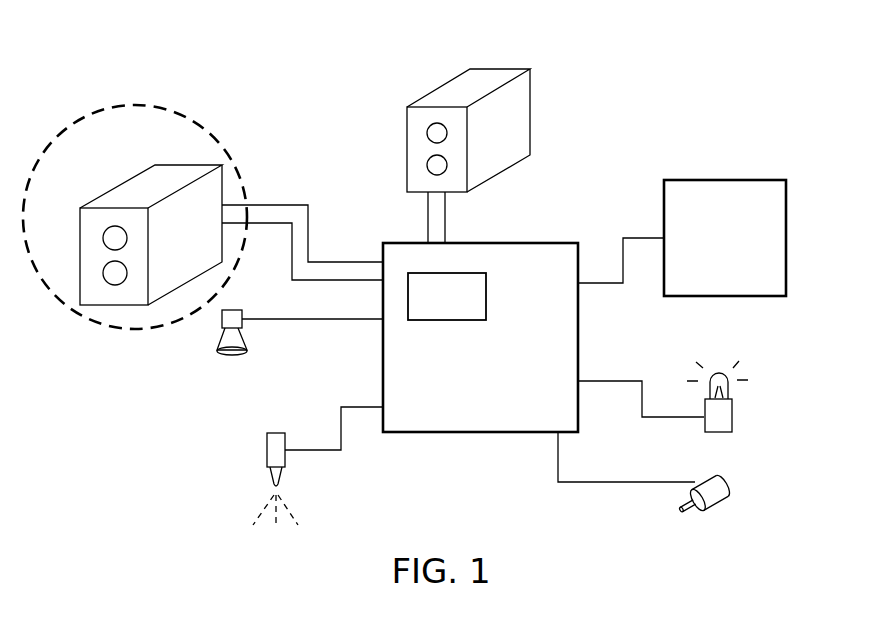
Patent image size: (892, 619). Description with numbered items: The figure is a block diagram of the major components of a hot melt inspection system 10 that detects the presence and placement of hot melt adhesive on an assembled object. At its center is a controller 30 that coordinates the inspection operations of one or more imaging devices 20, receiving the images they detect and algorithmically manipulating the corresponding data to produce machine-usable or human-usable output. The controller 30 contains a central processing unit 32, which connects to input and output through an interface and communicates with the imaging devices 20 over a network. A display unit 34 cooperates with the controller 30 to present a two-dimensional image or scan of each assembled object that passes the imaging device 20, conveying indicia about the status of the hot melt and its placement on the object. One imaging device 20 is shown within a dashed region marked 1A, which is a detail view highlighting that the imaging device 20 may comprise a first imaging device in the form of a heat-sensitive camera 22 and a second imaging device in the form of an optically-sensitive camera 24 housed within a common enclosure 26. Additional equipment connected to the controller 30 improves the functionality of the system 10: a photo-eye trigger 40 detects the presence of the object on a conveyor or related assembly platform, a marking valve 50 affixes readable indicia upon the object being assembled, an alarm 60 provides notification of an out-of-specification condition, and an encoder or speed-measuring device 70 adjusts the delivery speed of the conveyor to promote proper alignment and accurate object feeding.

The inspection system 10 is at (123, 82).
The detail view 1A is at (217, 138).
The imaging device 20 is at (135, 182).
The heat-sensitive camera 22 is at (101, 238).
The optically-sensitive camera 24 is at (101, 273).
The common enclosure 26 is at (203, 249).
The controller 30 is at (561, 228).
The central processing unit 32 is at (470, 320).
The display unit 34 is at (750, 180).
The photo-eye trigger 40 is at (220, 320).
The marking valve 50 is at (265, 450).
The alarm 60 is at (732, 417).
The encoder or speed-measuring device 70 is at (740, 487).